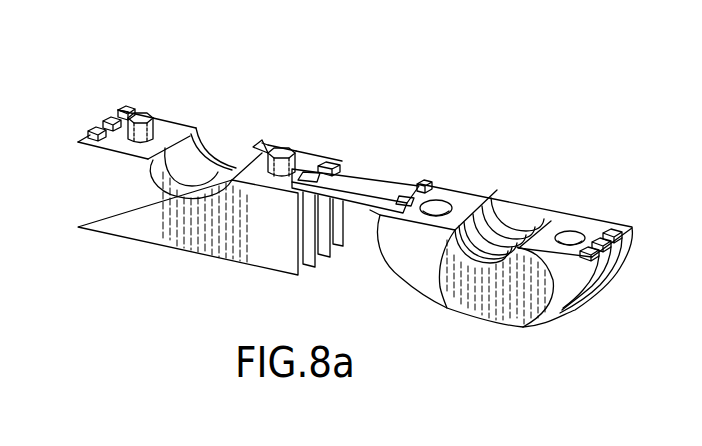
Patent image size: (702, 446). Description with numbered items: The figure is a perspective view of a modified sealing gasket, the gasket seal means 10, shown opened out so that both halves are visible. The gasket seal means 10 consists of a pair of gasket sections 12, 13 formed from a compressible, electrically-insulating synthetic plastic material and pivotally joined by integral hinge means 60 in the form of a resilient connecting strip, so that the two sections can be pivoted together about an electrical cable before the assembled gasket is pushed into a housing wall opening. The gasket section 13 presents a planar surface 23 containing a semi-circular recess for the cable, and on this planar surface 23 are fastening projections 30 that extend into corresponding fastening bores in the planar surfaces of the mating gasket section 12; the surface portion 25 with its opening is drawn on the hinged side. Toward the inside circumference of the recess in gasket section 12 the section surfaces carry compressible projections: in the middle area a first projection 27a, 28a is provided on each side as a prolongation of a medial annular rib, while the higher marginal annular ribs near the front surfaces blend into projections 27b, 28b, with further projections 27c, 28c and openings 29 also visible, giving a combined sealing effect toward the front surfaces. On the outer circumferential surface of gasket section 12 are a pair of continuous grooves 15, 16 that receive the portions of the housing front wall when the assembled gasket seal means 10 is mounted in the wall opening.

The gasket seal means 10 is at (366, 230).
The gasket section 12 is at (415, 272).
The gasket section 13 is at (118, 207).
The continuous groove 15 is at (610, 270).
The continuous groove 16 is at (612, 232).
The planar surface 23 is at (168, 127).
The mating surface portion 25 is at (306, 158).
The first projection 27a is at (522, 327).
The projection 27b is at (515, 262).
The inner rib 27c is at (548, 205).
The first projection 28a is at (477, 205).
The projection 28b is at (447, 305).
The inner rib 28c is at (495, 205).
The hole 29 is at (440, 199).
The fastening projection 30 is at (135, 110).
The hinge means 60 is at (375, 178).